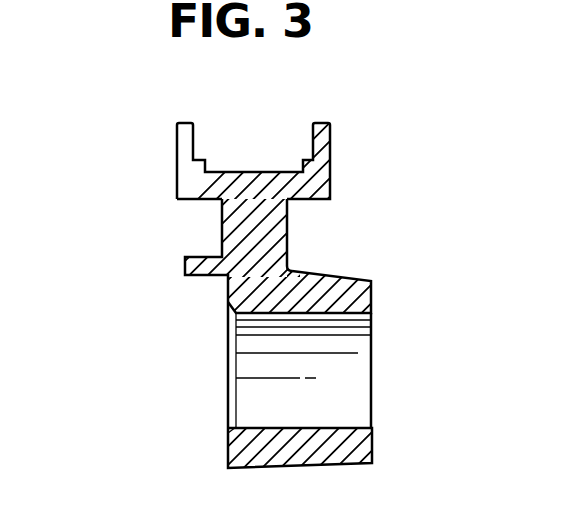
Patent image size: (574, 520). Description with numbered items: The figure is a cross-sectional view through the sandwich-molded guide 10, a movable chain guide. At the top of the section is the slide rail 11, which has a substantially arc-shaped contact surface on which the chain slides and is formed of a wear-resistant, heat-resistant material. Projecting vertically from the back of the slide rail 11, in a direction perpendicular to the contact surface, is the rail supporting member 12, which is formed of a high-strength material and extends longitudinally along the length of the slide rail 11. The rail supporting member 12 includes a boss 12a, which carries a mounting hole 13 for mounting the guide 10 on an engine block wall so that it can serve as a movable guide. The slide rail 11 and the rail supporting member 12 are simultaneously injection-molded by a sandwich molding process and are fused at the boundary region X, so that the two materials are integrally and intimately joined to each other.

The sandwich-molded guide 10 is at (174, 228).
The slide rail 11 is at (323, 166).
The rail supporting member 12 is at (267, 240).
The boss 12a is at (353, 277).
The mounting hole 13 is at (336, 427).
The boundary region X is at (260, 196).